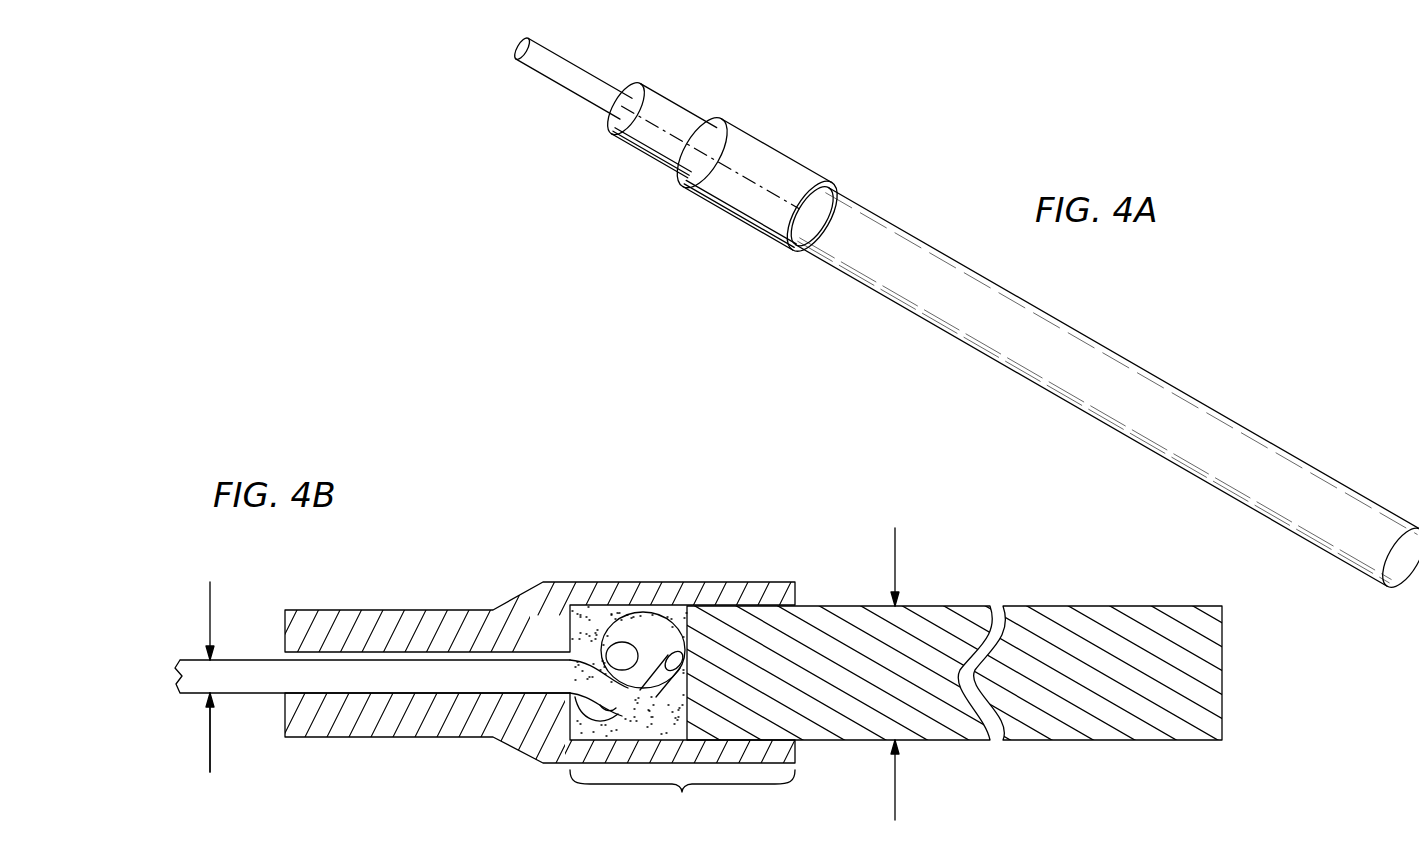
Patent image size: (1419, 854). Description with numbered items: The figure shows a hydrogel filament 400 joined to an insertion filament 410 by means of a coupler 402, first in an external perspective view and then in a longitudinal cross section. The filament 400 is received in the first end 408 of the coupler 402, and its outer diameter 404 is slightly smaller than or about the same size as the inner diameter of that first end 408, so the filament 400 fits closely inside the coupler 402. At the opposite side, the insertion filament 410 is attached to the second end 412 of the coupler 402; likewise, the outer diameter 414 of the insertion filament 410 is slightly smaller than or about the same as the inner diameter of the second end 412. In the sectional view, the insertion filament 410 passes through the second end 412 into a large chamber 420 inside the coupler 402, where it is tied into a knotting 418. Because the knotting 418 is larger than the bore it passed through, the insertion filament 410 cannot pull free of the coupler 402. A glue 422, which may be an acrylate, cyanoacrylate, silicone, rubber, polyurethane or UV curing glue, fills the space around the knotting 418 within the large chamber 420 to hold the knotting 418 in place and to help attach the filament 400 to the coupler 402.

In FIG. 4A, the filament 400 is at (1122, 375).
In FIG. 4B, the filament 400 is at (1100, 605).
In FIG. 4A, the coupler 402 is at (798, 170).
In FIG. 4B, the coupler 402 is at (720, 582).
In FIG. 4B, the outer diameter of filament 404 is at (897, 798).
In FIG. 4B, the first end of coupler 408 is at (798, 598).
In FIG. 4A, the insertion filament 410 is at (580, 92).
In FIG. 4B, the insertion filament 410 is at (392, 673).
In FIG. 4B, the second end of coupler 412 is at (287, 713).
In FIG. 4B, the outer diameter of insertion filament 414 is at (210, 605).
In FIG. 4B, the knotting 418 is at (653, 628).
In FIG. 4B, the large chamber 420 is at (682, 797).
In FIG. 4B, the glue 422 is at (583, 620).